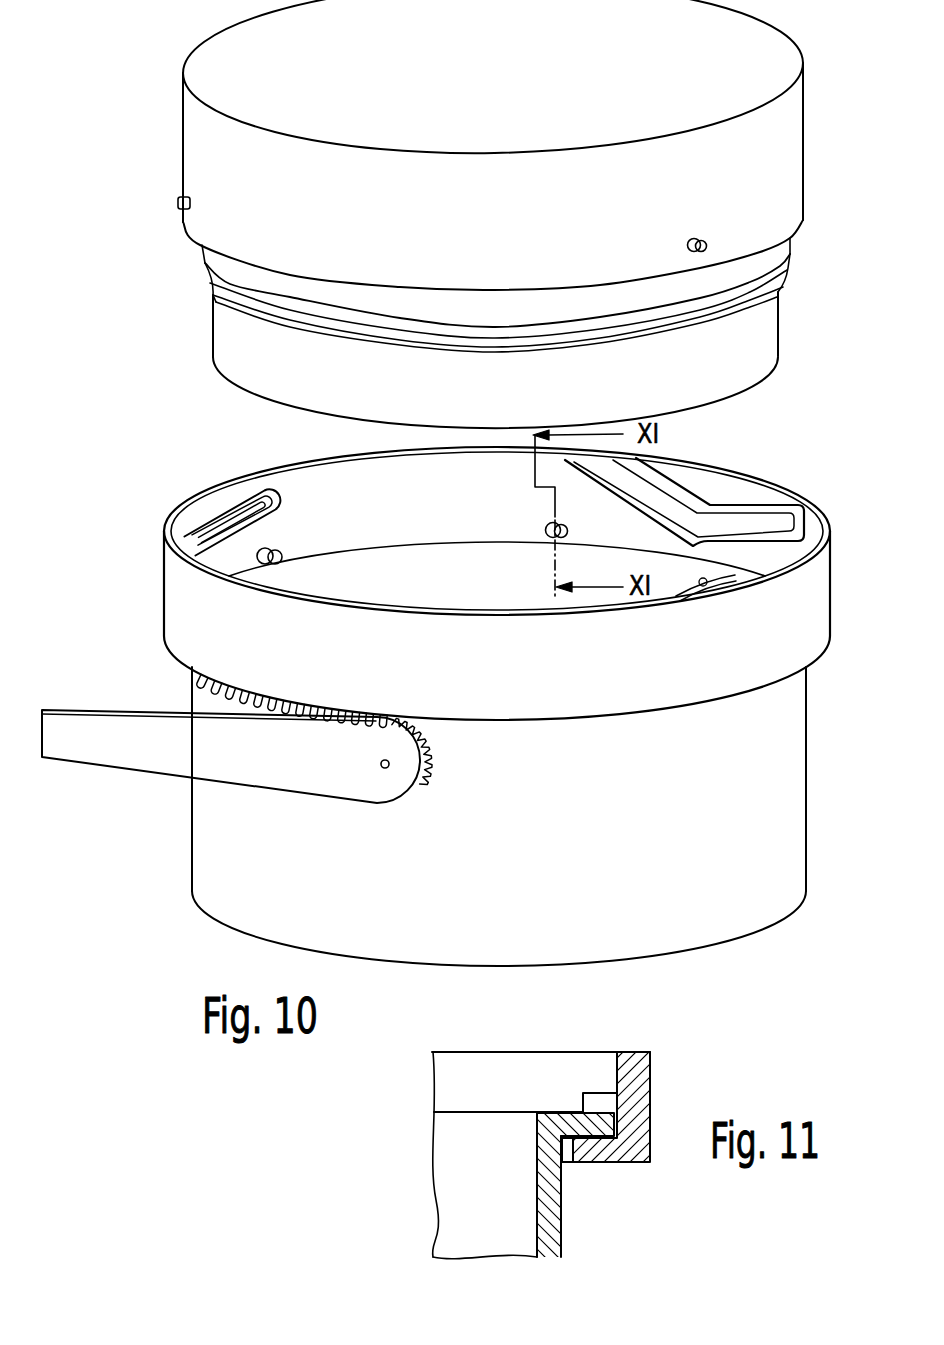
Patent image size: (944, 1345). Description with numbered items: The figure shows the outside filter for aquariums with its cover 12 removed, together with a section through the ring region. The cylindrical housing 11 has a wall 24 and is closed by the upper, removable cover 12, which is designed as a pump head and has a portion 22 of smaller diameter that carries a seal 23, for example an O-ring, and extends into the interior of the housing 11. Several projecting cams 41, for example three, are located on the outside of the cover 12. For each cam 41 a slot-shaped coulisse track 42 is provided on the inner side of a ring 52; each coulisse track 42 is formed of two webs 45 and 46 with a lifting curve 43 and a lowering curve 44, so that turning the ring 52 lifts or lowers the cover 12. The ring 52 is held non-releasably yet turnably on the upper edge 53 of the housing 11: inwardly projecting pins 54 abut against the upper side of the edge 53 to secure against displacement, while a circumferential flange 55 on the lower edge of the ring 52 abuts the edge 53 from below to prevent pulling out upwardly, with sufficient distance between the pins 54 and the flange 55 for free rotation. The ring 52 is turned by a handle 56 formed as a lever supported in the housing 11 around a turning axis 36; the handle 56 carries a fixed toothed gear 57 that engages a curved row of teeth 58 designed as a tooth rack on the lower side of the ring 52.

In FIG. 11, the housing 11 is at (543, 1257).
In FIG. 10, the cover 12 is at (767, 152).
In FIG. 10, the portion of smaller diameter 22 is at (772, 253).
In FIG. 10, the seal 23 is at (784, 288).
In FIG. 11, the wall 24 is at (550, 1227).
In FIG. 10, the turning axis 36 is at (385, 768).
In FIG. 10, the cam 41 is at (178, 202).
In FIG. 10, the coulisse track 42 is at (237, 517).
In FIG. 10, the lifting curve 43 is at (632, 483).
In FIG. 10, the lowering curve 44 is at (674, 493).
In FIG. 10, the web 45 is at (637, 500).
In FIG. 10, the web 46 is at (687, 503).
In FIG. 10, the ring 52 is at (776, 603).
In FIG. 11, the ring 52 is at (637, 1088).
In FIG. 11, the upper edge 53 is at (558, 1122).
In FIG. 10, the pin 54 is at (547, 530).
In FIG. 11, the pin 54 is at (600, 1098).
In FIG. 11, the flange 55 is at (587, 1163).
In FIG. 10, the handle 56 is at (117, 750).
In FIG. 10, the toothed gear 57 is at (433, 772).
In FIG. 10, the teeth 58 is at (257, 692).